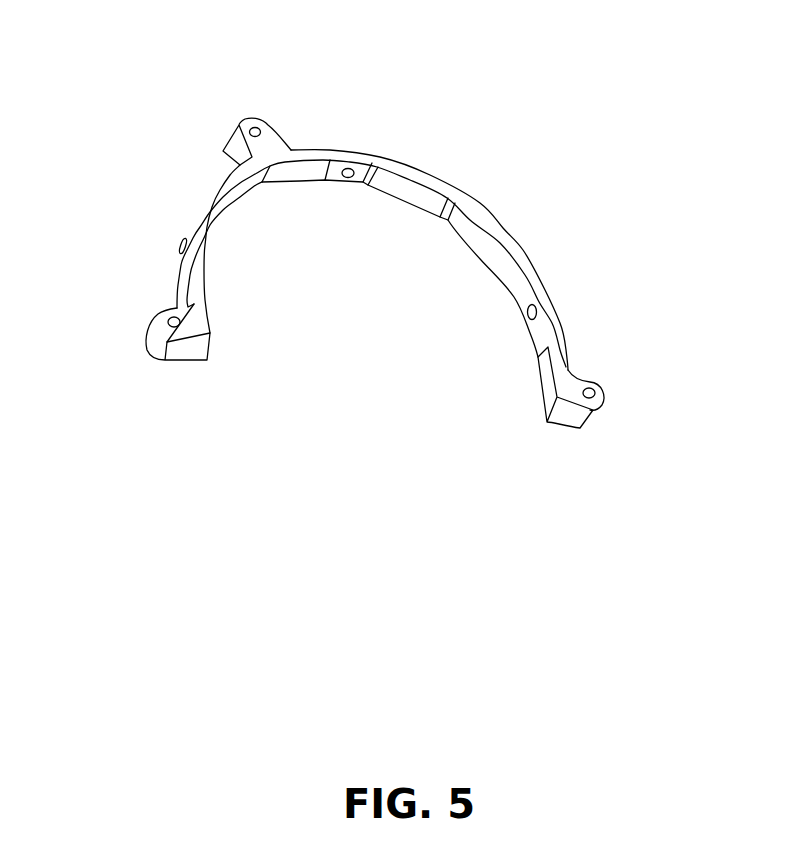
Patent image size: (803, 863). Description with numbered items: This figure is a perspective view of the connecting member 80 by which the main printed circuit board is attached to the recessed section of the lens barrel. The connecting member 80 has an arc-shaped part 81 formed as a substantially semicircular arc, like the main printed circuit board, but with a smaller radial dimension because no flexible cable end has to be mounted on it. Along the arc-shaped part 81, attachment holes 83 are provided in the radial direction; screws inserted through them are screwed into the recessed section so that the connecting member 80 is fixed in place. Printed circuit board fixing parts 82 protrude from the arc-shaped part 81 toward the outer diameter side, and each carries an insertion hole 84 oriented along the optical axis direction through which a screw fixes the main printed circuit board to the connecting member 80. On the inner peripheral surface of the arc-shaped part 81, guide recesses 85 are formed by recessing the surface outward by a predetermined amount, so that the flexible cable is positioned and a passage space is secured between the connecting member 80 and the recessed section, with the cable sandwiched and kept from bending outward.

The connecting member 80 is at (371, 236).
The arc-shaped part 81 is at (508, 228).
The printed circuit board fixing part 82 is at (247, 116).
The attachment hole 83 is at (181, 247).
The insertion hole 84 is at (266, 111).
The guide recess 85 is at (293, 170).